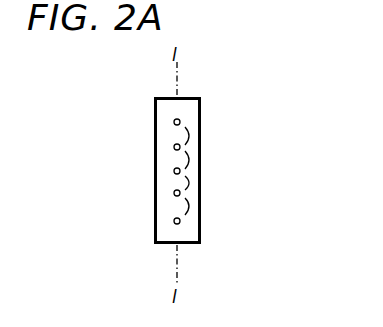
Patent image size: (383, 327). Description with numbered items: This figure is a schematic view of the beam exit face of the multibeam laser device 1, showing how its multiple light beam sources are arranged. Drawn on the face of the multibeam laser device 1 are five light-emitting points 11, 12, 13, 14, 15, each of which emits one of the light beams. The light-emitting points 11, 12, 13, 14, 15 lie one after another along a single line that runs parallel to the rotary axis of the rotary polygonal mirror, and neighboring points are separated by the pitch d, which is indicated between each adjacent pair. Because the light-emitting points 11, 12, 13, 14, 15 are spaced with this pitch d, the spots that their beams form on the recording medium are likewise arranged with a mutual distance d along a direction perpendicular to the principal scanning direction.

The multibeam laser device 1 is at (156, 99).
The light-emitting point 11 is at (174, 122).
The light-emitting point 12 is at (174, 147).
The light-emitting point 13 is at (174, 172).
The light-emitting point 14 is at (174, 194).
The light-emitting point 15 is at (174, 222).
The pitch d is at (200, 123).